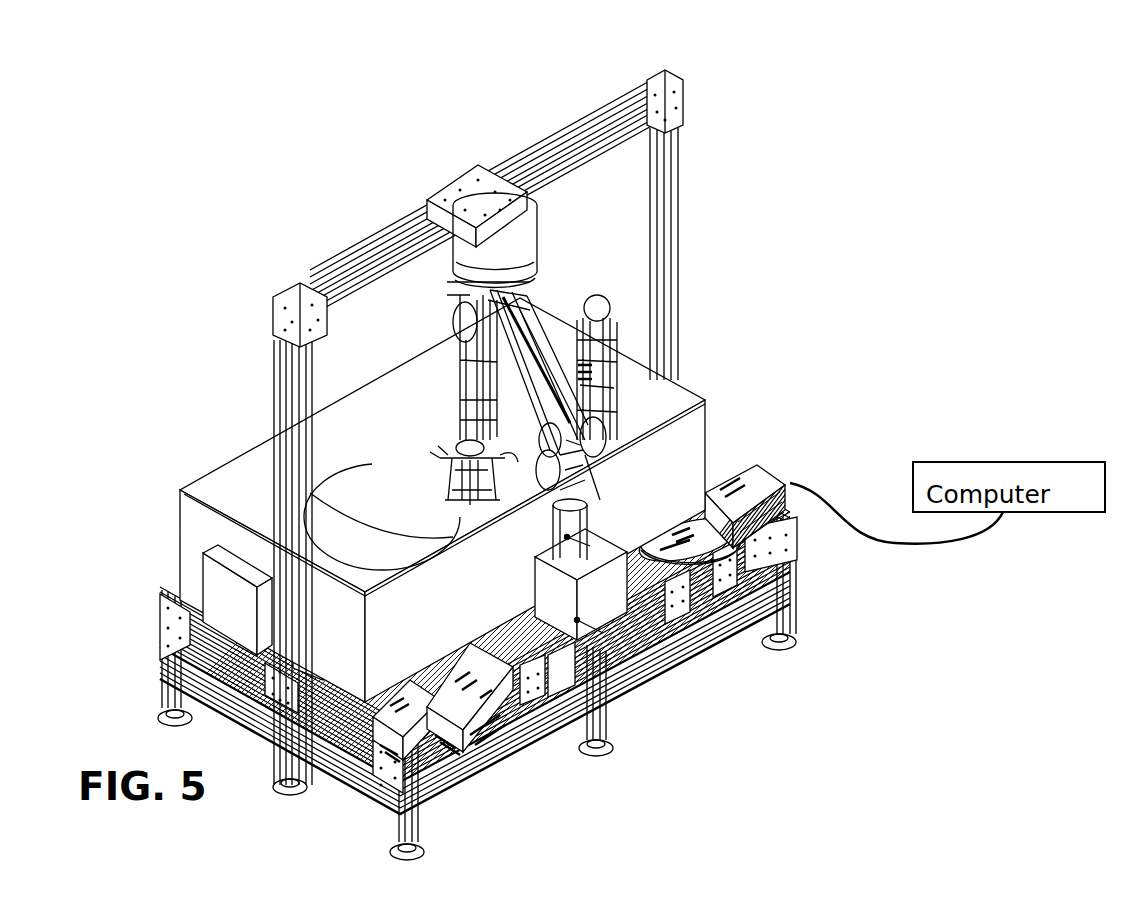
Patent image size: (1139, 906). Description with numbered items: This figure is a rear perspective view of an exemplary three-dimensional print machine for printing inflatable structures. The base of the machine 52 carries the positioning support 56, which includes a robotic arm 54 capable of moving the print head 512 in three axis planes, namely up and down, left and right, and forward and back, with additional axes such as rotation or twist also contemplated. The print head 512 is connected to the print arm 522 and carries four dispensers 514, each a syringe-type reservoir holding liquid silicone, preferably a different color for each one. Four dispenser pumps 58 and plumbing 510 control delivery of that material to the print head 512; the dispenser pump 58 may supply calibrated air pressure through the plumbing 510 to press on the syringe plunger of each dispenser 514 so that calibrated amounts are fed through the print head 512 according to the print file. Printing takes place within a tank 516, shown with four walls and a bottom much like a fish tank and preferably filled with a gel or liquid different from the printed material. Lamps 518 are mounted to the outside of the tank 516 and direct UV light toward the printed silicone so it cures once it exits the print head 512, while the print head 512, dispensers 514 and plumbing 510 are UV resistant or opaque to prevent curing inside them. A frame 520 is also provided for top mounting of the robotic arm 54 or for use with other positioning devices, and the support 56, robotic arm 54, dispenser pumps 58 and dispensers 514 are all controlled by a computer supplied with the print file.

The base of the machine 52 is at (518, 715).
The robotic arm 54 is at (519, 747).
The positioning support 56 is at (585, 664).
The dispenser pump 58 is at (754, 485).
The plumbing 510 is at (670, 431).
The print head 512 is at (264, 314).
The dispenser 514 is at (295, 310).
The tank 516 is at (388, 500).
The lamp 518 is at (172, 550).
The frame 520 is at (377, 427).
The print arm 522 is at (671, 199).